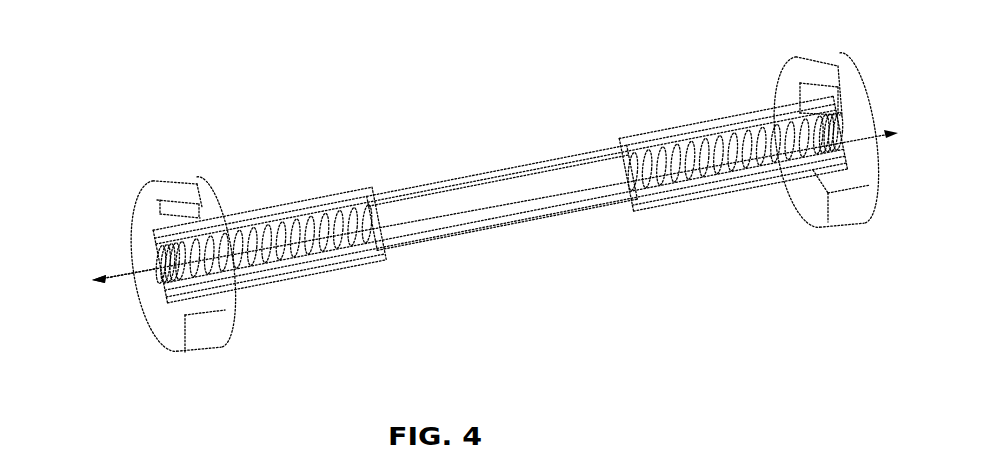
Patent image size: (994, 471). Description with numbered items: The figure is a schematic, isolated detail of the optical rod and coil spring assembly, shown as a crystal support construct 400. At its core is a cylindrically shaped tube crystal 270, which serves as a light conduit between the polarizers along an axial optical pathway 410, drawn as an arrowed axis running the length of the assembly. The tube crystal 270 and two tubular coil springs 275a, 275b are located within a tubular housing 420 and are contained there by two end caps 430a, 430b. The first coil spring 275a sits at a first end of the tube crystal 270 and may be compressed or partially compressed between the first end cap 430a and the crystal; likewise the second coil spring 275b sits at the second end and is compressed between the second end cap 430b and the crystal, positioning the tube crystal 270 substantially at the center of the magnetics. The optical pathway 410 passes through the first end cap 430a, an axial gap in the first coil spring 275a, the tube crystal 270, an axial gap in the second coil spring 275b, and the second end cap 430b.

The crystal support construct 400 is at (308, 98).
The axial optical pathway 410 is at (126, 272).
The tubular housing 420 is at (670, 140).
The tube crystal 270 is at (530, 190).
The first coil spring 275a is at (343, 262).
The second coil spring 275b is at (713, 175).
The first end cap 430a is at (208, 337).
The second end cap 430b is at (835, 222).